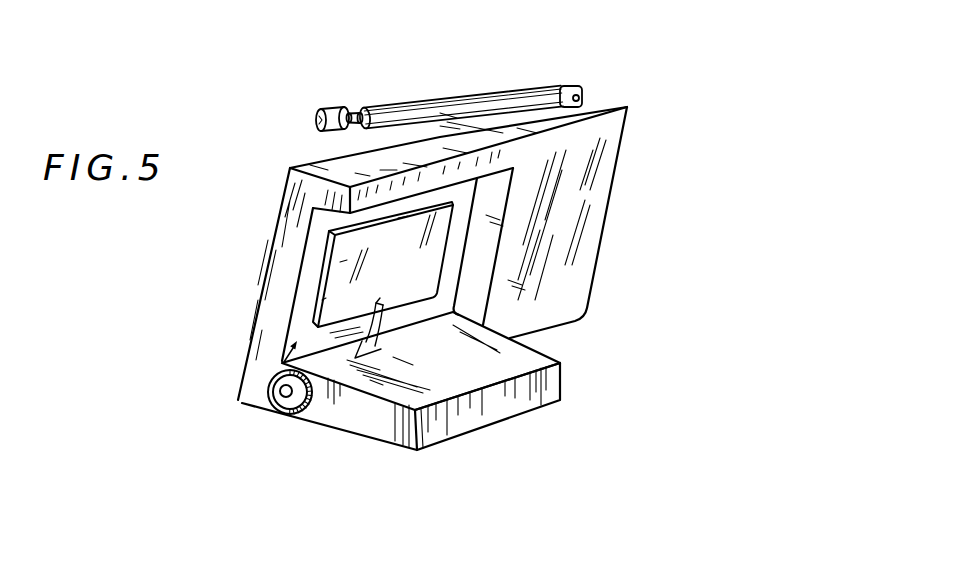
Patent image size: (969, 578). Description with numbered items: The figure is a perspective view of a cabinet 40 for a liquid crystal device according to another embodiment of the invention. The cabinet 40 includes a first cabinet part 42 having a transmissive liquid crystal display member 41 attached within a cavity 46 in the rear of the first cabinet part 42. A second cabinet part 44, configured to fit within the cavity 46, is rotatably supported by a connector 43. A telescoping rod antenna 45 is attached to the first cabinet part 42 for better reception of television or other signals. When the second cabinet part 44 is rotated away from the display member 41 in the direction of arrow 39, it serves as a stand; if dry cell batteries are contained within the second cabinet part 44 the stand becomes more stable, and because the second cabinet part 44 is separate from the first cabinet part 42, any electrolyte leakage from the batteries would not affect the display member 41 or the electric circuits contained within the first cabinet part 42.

The arrow 39 is at (371, 341).
The cabinet 40 is at (671, 159).
The transmissive liquid crystal display member 41 is at (348, 273).
The first cabinet part 42 is at (586, 239).
The connector 43 is at (277, 401).
The second cabinet part 44 is at (553, 391).
The telescoping rod antenna 45 is at (489, 95).
The cavity 46 is at (283, 371).